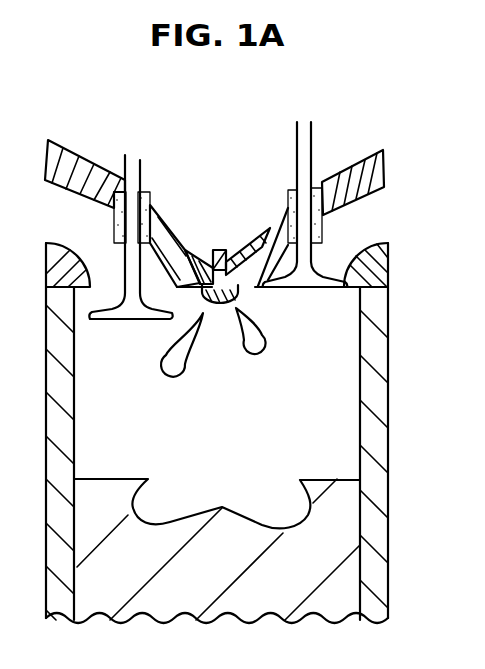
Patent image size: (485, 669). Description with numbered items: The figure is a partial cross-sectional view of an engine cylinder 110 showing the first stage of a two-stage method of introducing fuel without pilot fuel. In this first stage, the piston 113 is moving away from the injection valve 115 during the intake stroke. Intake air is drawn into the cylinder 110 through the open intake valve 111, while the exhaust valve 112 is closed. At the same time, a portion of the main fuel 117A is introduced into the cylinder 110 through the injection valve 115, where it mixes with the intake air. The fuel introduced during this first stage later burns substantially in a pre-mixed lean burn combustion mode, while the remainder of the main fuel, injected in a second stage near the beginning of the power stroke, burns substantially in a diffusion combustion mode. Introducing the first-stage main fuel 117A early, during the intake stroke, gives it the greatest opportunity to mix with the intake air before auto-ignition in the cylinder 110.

The cylinder 110 is at (140, 426).
The intake valve 111 is at (141, 178).
The exhaust valve 112 is at (313, 153).
The piston 113 is at (222, 567).
The injection valve 115 is at (198, 247).
The main fuel 117A is at (255, 349).